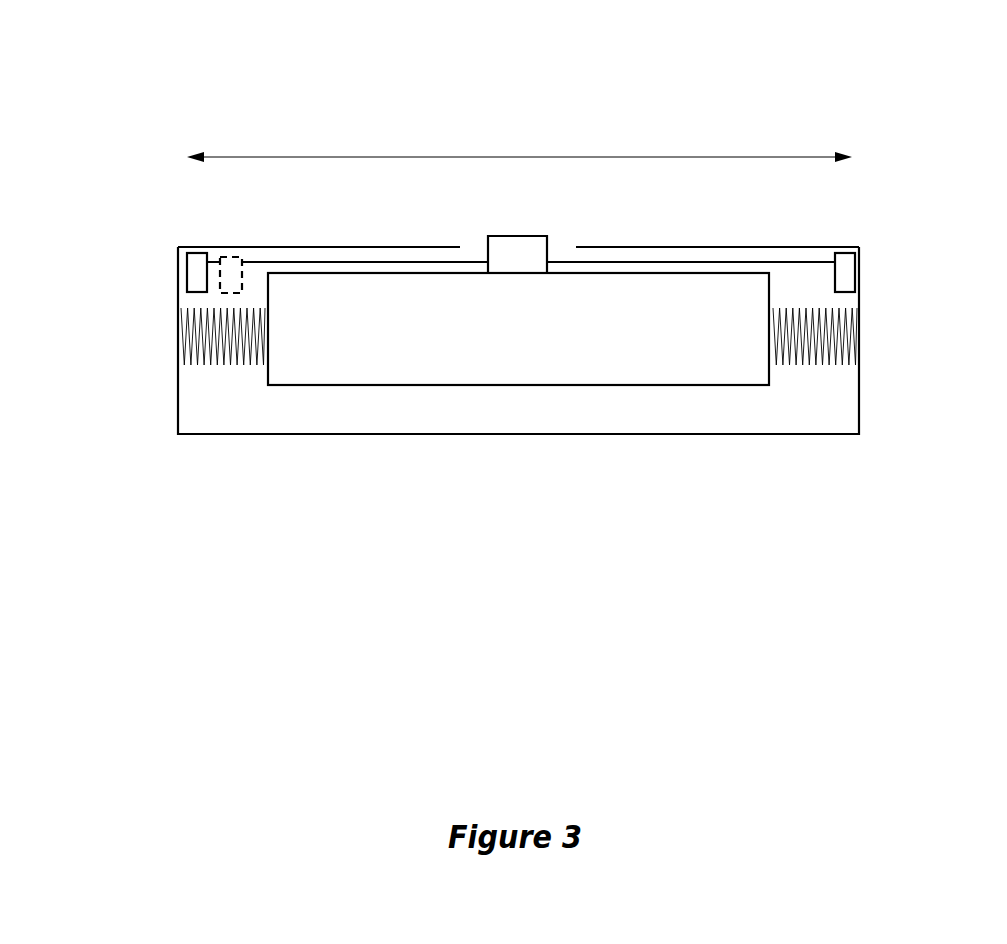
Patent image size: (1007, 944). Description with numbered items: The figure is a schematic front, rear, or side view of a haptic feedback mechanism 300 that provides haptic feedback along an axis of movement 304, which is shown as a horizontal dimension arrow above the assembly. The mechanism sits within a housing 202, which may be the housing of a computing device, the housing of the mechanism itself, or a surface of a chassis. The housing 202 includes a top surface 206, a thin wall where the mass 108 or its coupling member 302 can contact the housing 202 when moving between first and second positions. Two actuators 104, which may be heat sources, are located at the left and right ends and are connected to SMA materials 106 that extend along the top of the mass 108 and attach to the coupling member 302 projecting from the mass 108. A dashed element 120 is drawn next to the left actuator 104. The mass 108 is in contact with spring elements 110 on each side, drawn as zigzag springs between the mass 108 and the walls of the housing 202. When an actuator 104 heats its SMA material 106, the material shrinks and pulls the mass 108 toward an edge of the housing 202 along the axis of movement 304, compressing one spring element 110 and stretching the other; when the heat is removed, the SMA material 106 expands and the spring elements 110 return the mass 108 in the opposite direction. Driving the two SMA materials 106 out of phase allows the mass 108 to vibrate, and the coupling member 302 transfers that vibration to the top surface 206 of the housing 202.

The haptic feedback mechanism 300 is at (137, 72).
The axis of movement 304 is at (711, 157).
The housing 202 is at (860, 397).
The top surface 206 is at (712, 247).
The coupling member 302 is at (507, 236).
The SMA material 106 is at (360, 263).
The actuator 104 is at (198, 273).
The dashed contact region 120 is at (232, 258).
The mass 108 is at (357, 385).
The spring element 110 is at (180, 320).